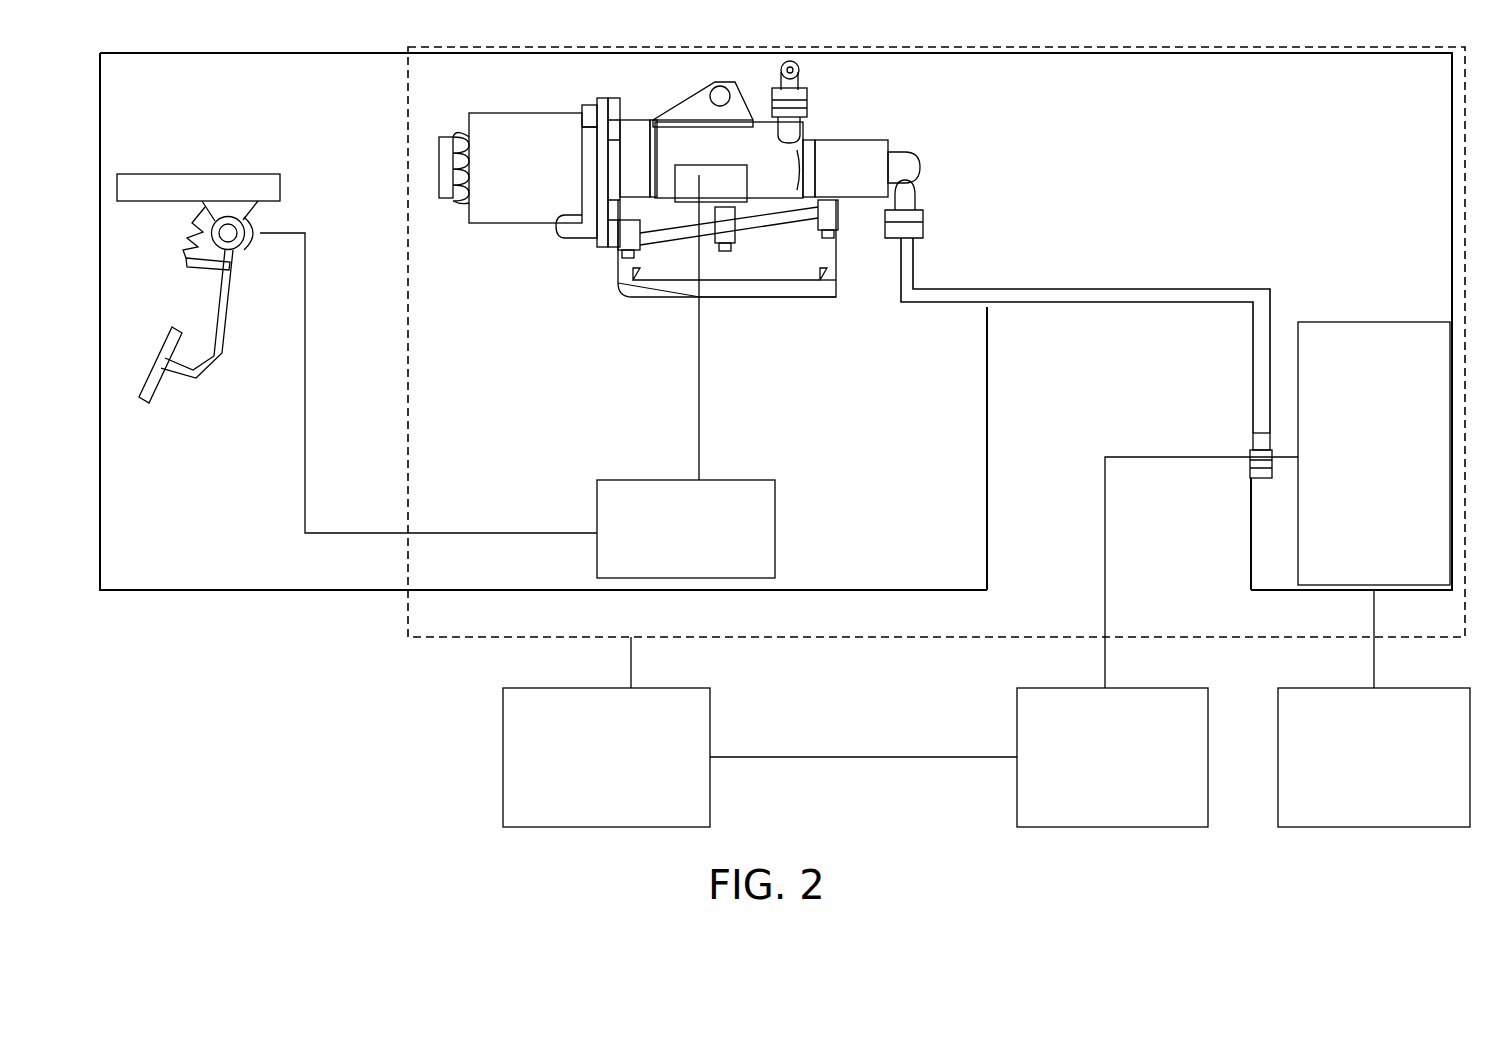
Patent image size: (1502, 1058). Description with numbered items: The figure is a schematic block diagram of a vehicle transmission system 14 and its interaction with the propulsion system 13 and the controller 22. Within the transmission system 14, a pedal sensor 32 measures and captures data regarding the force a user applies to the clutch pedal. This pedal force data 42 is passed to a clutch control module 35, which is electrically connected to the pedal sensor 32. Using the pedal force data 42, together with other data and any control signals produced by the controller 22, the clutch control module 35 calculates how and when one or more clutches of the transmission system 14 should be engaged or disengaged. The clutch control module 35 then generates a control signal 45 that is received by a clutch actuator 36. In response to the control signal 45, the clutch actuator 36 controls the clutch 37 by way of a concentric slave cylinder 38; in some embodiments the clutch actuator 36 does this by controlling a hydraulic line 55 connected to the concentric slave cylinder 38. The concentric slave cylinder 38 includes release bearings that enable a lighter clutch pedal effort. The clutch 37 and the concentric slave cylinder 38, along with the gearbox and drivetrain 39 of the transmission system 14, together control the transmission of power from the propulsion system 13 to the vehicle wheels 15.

The transmission system 14 is at (967, 46).
The pedal sensor 32 is at (222, 352).
The pedal force data 42 is at (305, 493).
The clutch control module 35 is at (597, 493).
The control signal 45 is at (700, 362).
The clutch actuator 36 is at (640, 258).
The hydraulic line 55 is at (1085, 305).
The concentric slave cylinder 38 is at (1253, 433).
The clutch 37 is at (1253, 462).
The gearbox and drivetrain 39 is at (1375, 322).
The controller 22 is at (618, 768).
The propulsion system 13 is at (1017, 703).
The vehicle wheels 15 is at (1278, 703).